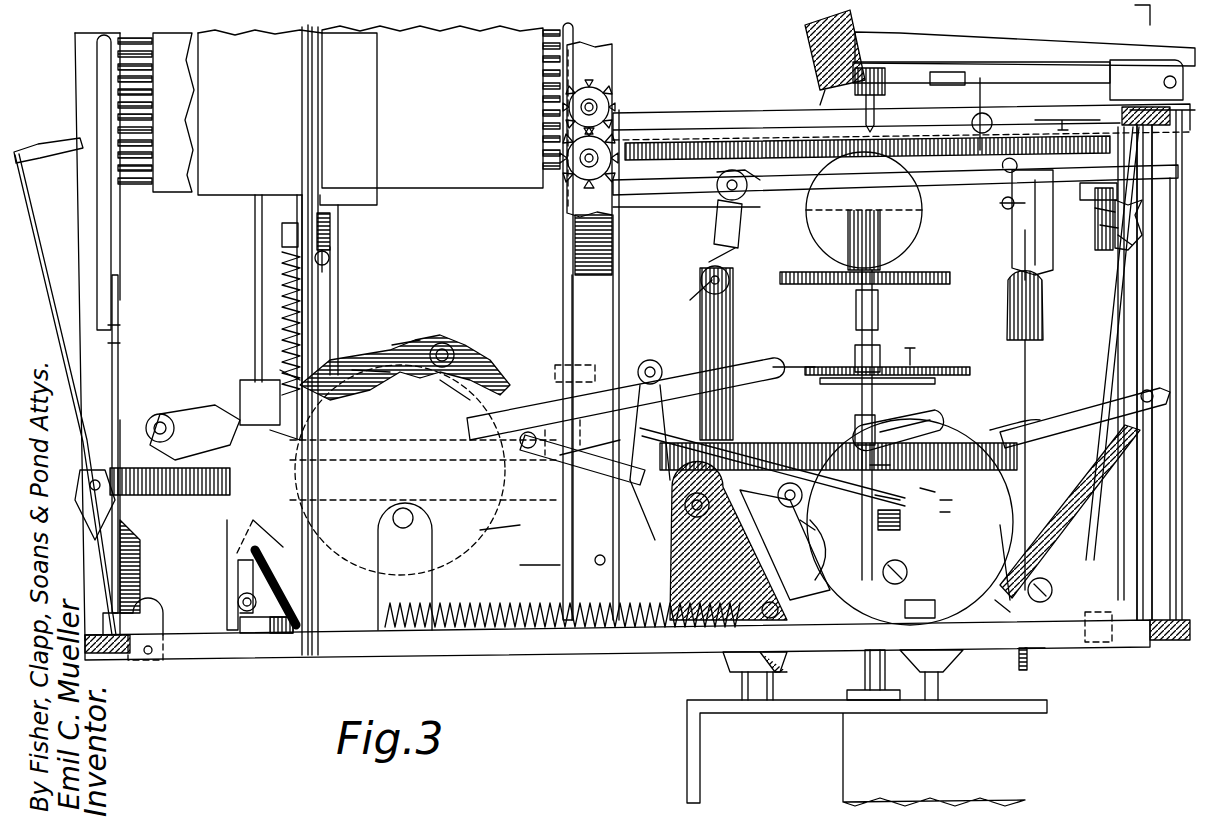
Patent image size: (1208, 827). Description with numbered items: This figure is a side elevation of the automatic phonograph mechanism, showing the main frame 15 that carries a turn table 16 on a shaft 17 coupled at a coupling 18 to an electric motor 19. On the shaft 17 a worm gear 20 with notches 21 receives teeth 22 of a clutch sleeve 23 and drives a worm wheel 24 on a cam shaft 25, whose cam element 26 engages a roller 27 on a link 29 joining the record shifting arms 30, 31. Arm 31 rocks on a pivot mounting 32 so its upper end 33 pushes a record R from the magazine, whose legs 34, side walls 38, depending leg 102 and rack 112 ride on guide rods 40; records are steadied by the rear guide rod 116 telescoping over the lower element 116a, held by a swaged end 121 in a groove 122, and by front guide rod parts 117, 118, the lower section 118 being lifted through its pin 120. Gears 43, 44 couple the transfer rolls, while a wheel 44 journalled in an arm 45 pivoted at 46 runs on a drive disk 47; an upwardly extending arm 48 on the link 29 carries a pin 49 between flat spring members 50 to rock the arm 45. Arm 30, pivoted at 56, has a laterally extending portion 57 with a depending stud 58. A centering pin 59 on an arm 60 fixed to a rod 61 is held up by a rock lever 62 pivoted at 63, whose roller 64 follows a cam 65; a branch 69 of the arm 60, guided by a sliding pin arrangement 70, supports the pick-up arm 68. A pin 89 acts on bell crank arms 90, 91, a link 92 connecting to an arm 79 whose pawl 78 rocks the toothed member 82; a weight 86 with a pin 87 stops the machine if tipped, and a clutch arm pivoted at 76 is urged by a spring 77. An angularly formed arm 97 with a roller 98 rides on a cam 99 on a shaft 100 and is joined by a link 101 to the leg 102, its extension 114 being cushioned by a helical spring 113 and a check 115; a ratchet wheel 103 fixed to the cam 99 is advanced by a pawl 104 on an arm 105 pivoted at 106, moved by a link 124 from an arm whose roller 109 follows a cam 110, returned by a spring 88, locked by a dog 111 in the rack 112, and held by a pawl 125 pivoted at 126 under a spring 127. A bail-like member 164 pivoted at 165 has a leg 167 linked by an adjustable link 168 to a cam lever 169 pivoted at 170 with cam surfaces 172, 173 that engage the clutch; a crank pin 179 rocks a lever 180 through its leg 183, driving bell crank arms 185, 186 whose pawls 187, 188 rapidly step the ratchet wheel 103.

The main frame structure 15 is at (695, 112).
The turn table 16 is at (680, 160).
The shaft 17 is at (863, 312).
The coupling 18 is at (840, 622).
The electric motor 19 is at (1048, 755).
The worm gear 20 is at (878, 520).
The notches 21 is at (875, 500).
The teeth 22 is at (872, 475).
The sleeve 23 is at (856, 425).
The worm wheel 24 is at (948, 512).
The cam shaft 25 is at (950, 504).
The cam element 26 is at (815, 545).
The roller 27 is at (980, 420).
The link 29 is at (160, 496).
The record shifting arm 30 is at (1114, 346).
The record shifting arm 31 is at (63, 356).
The pivot mounting 32 is at (157, 662).
The upper end of shifter 33 is at (49, 147).
The upwardly extending legs 34 is at (372, 190).
The side walls 38 is at (440, 163).
The guide rods 40 is at (304, 88).
The gear 43 is at (605, 95).
The gear and drive wheel 44 is at (568, 175).
The arm 45 is at (790, 205).
The pivot 46 is at (725, 198).
The drive disk 47 is at (925, 272).
The upwardly extending arm 48 is at (706, 332).
The pin 49 is at (728, 285).
The flat spring members 50 is at (728, 258).
The pivot 56 is at (1100, 650).
The laterally extending portion 57 is at (1100, 118).
The depending stud 58 is at (1060, 128).
The centering pin 59 is at (872, 90).
The arm 60 is at (1048, 78).
The rod 61 is at (1153, 330).
The rock lever 62 is at (1075, 566).
The pivot 63 is at (1045, 606).
The roller 64 is at (940, 615).
The cam 65 is at (1010, 616).
The pick-up arm 68 is at (1000, 40).
The branch arm 69 is at (960, 82).
The sliding pin arrangement 70 is at (976, 108).
The pivot 76 is at (1040, 650).
The spring means 77 is at (1030, 662).
The pawl 78 is at (1012, 165).
The arm 79 is at (1096, 190).
The toothed member 82 is at (1040, 255).
The weight 86 is at (1042, 310).
The pin 87 is at (1006, 209).
The spring 88 is at (502, 540).
The pin 89 is at (1134, 240).
The bell crank arm 90 is at (1142, 214).
The bell crank arm 91 is at (1112, 225).
The link 92 is at (1108, 212).
The angularly formed arm 97 is at (468, 355).
The roller 98 is at (443, 343).
The cam 99 is at (408, 345).
The shaft 100 is at (395, 518).
The link 101 is at (287, 370).
The depending leg 102 is at (332, 222).
The ratchet wheel 103 is at (392, 345).
The pawl 104 is at (380, 350).
The pivoted arm 105 is at (180, 445).
The pivot 106 is at (268, 635).
The roller 109 is at (794, 506).
The cam 110 is at (810, 525).
The locking dog 111 is at (260, 418).
The rack 112 is at (282, 290).
The helical spring 113 is at (532, 628).
The extension 114 is at (745, 545).
The check 115 is at (242, 386).
The rear guide rod 116 is at (112, 240).
The lower guide element 116a is at (120, 365).
The upper front guide rod 117 is at (575, 40).
The lower front guide rod section 118 is at (572, 290).
The pin 120 is at (583, 365).
The swaged end 121 is at (119, 337).
The groove 122 is at (119, 344).
The link 124 is at (490, 490).
The pawl 125 is at (232, 556).
The pivot 126 is at (238, 600).
The spring 127 is at (292, 635).
The bail-like member 164 is at (793, 360).
The pivots 165 is at (606, 562).
The leg 167 is at (615, 548).
The adjustable link 168 is at (755, 456).
The cam lever 169 is at (932, 490).
The pivot 170 is at (910, 566).
The upper cam surface 172 is at (900, 422).
The lower cam surface 173 is at (932, 425).
The crank pin 179 is at (911, 348).
The lever 180 is at (858, 362).
The leg 183 is at (942, 365).
The bell crank arm 185 is at (662, 398).
The bell crank arm 186 is at (520, 445).
The pawl 187 is at (545, 395).
The pawl 188 is at (540, 566).
The record R is at (548, 94).